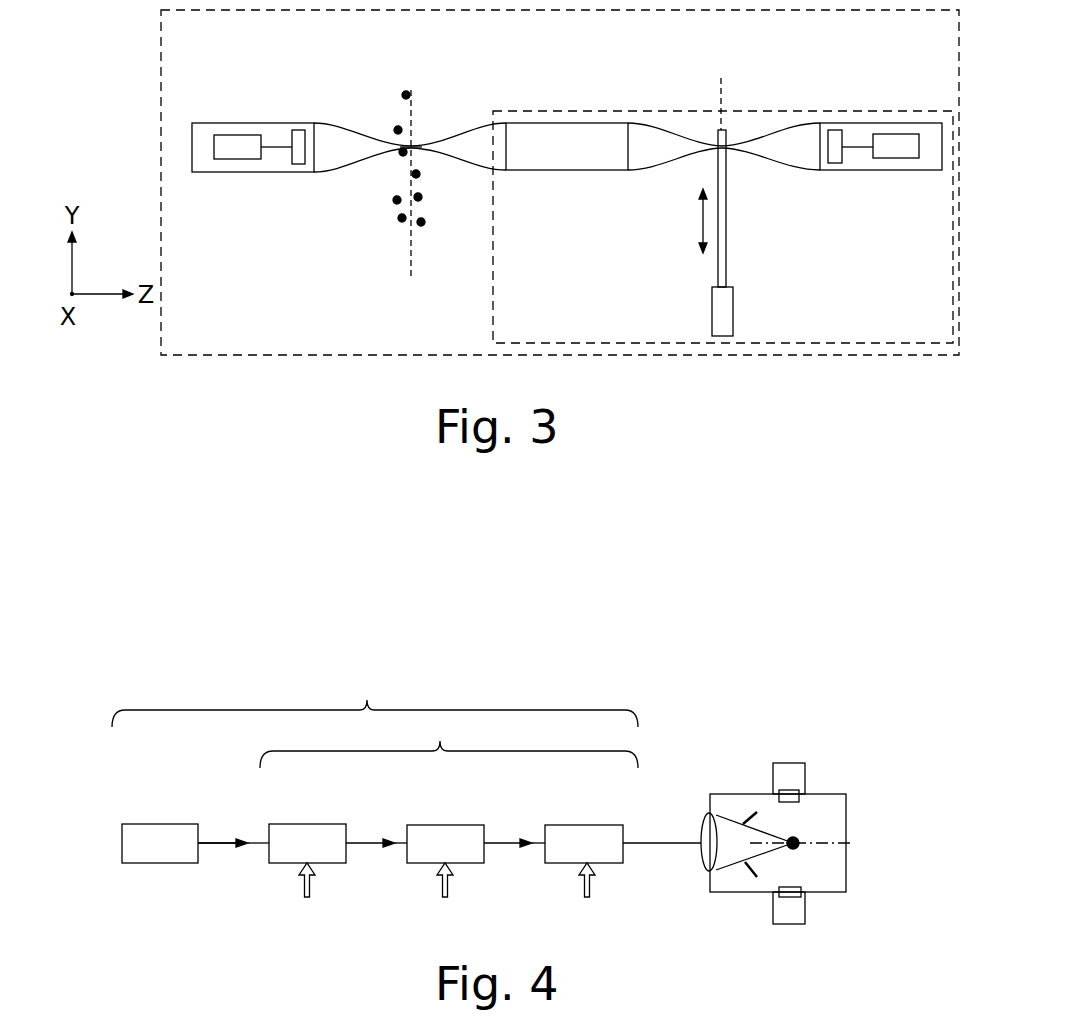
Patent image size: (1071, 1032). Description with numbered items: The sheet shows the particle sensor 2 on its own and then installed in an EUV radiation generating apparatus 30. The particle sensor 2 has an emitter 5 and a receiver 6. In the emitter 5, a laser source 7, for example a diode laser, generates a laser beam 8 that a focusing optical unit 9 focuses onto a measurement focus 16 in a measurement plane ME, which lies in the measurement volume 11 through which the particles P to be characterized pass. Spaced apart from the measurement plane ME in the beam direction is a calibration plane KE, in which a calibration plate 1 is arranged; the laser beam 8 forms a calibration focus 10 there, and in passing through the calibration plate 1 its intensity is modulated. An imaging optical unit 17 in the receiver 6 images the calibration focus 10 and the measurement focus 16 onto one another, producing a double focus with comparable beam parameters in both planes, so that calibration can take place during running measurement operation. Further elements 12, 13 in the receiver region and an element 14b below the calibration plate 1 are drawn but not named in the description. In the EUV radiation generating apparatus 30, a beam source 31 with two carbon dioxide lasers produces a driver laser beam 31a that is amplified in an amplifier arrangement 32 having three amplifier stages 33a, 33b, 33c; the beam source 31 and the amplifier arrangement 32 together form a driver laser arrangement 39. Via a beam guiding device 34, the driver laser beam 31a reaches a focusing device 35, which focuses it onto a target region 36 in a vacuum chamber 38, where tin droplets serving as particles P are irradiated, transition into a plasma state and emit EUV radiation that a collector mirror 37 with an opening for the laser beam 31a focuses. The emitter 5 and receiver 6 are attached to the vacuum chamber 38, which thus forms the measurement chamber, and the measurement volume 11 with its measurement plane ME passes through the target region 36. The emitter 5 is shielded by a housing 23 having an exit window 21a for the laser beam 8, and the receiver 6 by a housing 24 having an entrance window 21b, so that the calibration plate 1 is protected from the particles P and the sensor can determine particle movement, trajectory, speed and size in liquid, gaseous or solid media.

In FIG. 3, the calibration plate 1 is at (706, 281).
In FIG. 3, the particle sensor 2 is at (160, 75).
In FIG. 3, the emitter 5 is at (262, 125).
In FIG. 4, the emitter 5 is at (793, 775).
In FIG. 3, the receiver 6 is at (928, 110).
In FIG. 4, the receiver 6 is at (797, 910).
In FIG. 3, the laser source 7 is at (228, 147).
In FIG. 3, the laser beam 8 is at (355, 130).
In FIG. 3, the focusing optical unit 9 is at (298, 135).
In FIG. 3, the calibration focus 10 is at (716, 140).
In FIG. 3, the measurement volume 11 is at (426, 129).
In FIG. 4, the measurement volume 11 is at (828, 846).
In FIG. 3, the receiving optics 12 is at (833, 135).
In FIG. 3, the detector 13 is at (890, 143).
In FIG. 3, the blade actuator 14b is at (733, 315).
In FIG. 3, the measurement focus 16 is at (403, 154).
In FIG. 3, the imaging optical unit 17 is at (592, 143).
In FIG. 3, the particles P is at (404, 92).
In FIG. 3, the measurement plane ME is at (413, 113).
In FIG. 4, the measurement plane ME is at (858, 843).
In FIG. 3, the calibration plane KE is at (725, 90).
In FIG. 4, the EUV radiation generating apparatus 30 is at (114, 765).
In FIG. 4, the beam source 31 is at (165, 843).
In FIG. 4, the driver laser beam 31a is at (225, 843).
In FIG. 4, the amplifier arrangement 32 is at (449, 738).
In FIG. 4, the amplifier stage 33a is at (315, 843).
In FIG. 4, the amplifier stage 33b is at (450, 843).
In FIG. 4, the amplifier stage 33c is at (585, 843).
In FIG. 4, the beam guiding device 34 is at (673, 843).
In FIG. 4, the focusing device 35 is at (708, 830).
In FIG. 4, the target region 36 is at (798, 839).
In FIG. 4, the collector mirror 37 is at (748, 872).
In FIG. 4, the vacuum chamber 38 is at (750, 794).
In FIG. 4, the driver laser arrangement 39 is at (375, 697).
In FIG. 4, the exit window 21a is at (793, 805).
In FIG. 4, the entrance window 21b is at (797, 886).
In FIG. 4, the housing 23 is at (775, 763).
In FIG. 4, the housing 24 is at (787, 924).